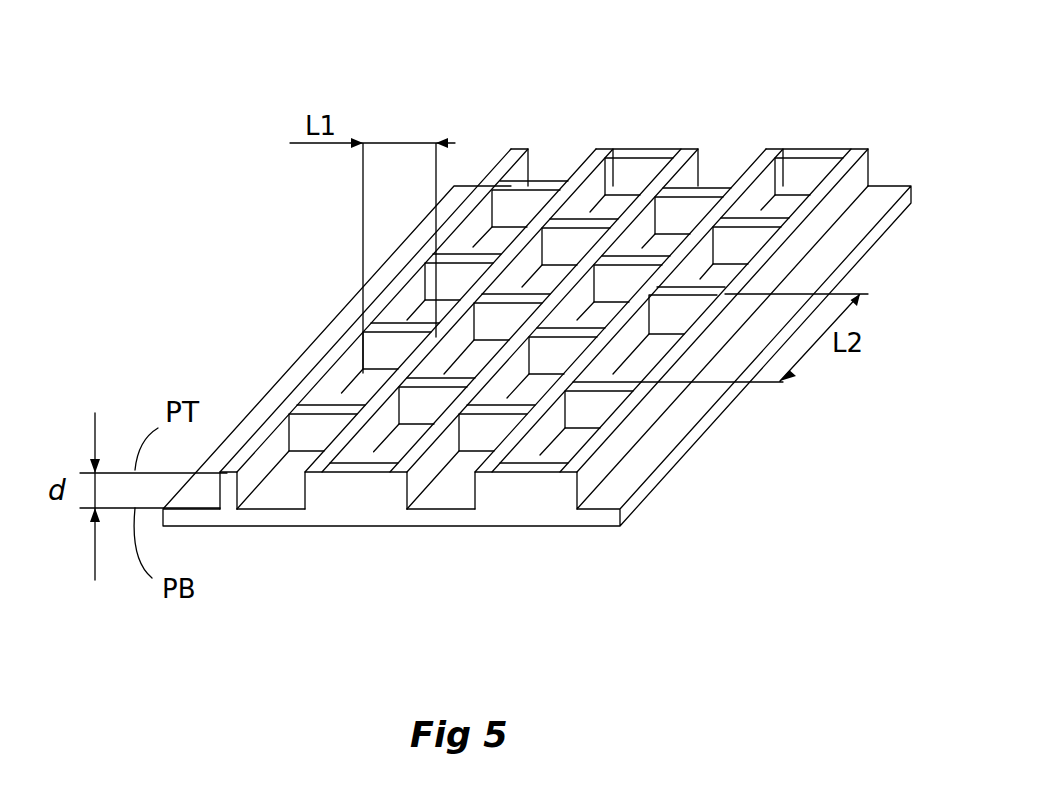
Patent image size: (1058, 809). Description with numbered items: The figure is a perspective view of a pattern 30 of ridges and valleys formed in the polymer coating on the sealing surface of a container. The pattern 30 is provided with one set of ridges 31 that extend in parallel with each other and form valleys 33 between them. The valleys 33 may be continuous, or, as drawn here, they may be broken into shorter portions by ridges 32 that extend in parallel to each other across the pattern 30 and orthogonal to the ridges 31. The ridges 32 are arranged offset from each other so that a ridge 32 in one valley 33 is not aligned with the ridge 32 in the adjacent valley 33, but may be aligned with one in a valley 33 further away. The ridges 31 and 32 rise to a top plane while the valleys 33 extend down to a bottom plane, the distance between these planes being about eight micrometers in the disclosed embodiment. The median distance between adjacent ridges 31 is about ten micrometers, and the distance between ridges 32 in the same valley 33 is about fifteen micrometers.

The pattern 30 is at (288, 306).
The ridges 31 is at (862, 148).
The ridges 32 is at (383, 357).
The valleys 33 is at (562, 450).